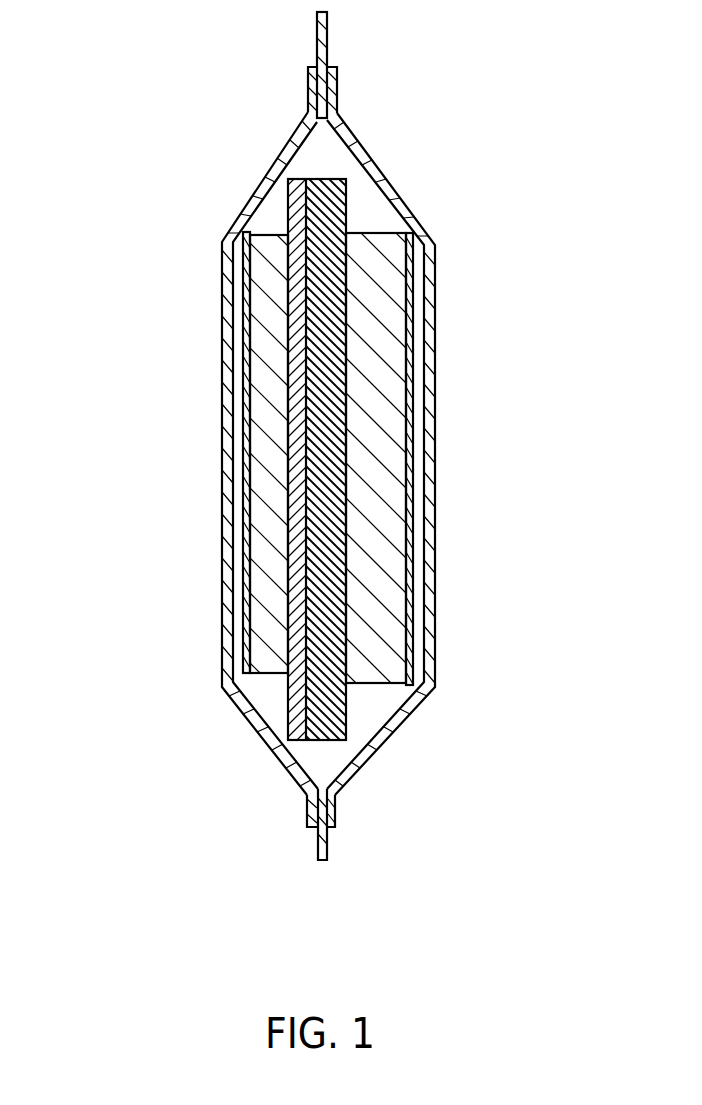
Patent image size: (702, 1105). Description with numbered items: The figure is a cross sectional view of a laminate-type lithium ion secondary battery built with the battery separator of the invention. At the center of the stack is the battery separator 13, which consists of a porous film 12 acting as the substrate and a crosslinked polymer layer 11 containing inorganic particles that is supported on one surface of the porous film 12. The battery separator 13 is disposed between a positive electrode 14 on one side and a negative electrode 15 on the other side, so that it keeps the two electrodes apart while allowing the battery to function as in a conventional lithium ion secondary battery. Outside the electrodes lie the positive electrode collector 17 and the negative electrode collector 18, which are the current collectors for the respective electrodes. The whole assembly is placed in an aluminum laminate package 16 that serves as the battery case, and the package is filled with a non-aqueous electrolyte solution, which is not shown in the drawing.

The crosslinked polymer layer 11 is at (289, 435).
The porous film 12 is at (312, 498).
The battery separator 13 is at (120, 423).
The positive electrode 14 is at (273, 353).
The negative electrode 15 is at (388, 298).
The aluminum laminate package 16 is at (265, 735).
The positive electrode collector 17 is at (247, 293).
The negative electrode collector 18 is at (410, 374).